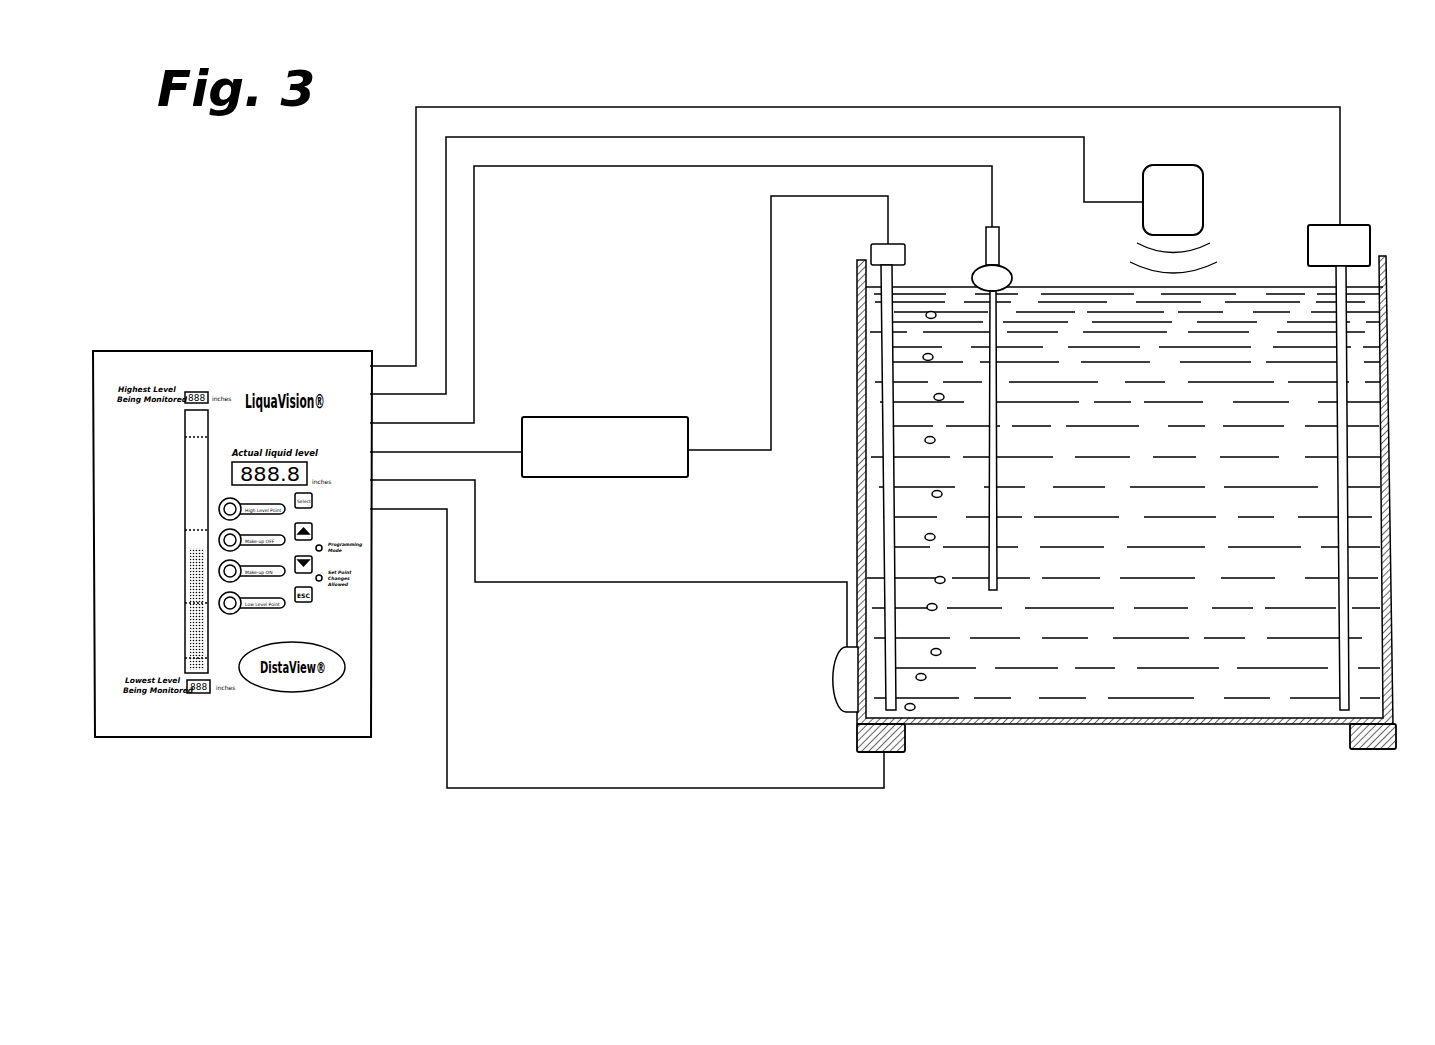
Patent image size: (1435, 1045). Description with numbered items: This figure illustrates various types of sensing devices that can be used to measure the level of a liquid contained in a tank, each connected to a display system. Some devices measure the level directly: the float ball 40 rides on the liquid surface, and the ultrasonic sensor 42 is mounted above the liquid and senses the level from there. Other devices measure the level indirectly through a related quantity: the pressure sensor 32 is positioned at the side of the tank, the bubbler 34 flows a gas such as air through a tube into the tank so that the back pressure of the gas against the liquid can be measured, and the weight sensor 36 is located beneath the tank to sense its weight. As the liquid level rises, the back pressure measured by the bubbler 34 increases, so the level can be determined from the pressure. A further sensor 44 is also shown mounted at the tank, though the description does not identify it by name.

The pressure sensor 32 is at (832, 677).
The bubbler 34 is at (657, 417).
The weight sensor 36 is at (905, 735).
The float ball 40 is at (1011, 270).
The ultrasonic sensor 42 is at (1203, 172).
The level sensor 44 is at (1370, 228).